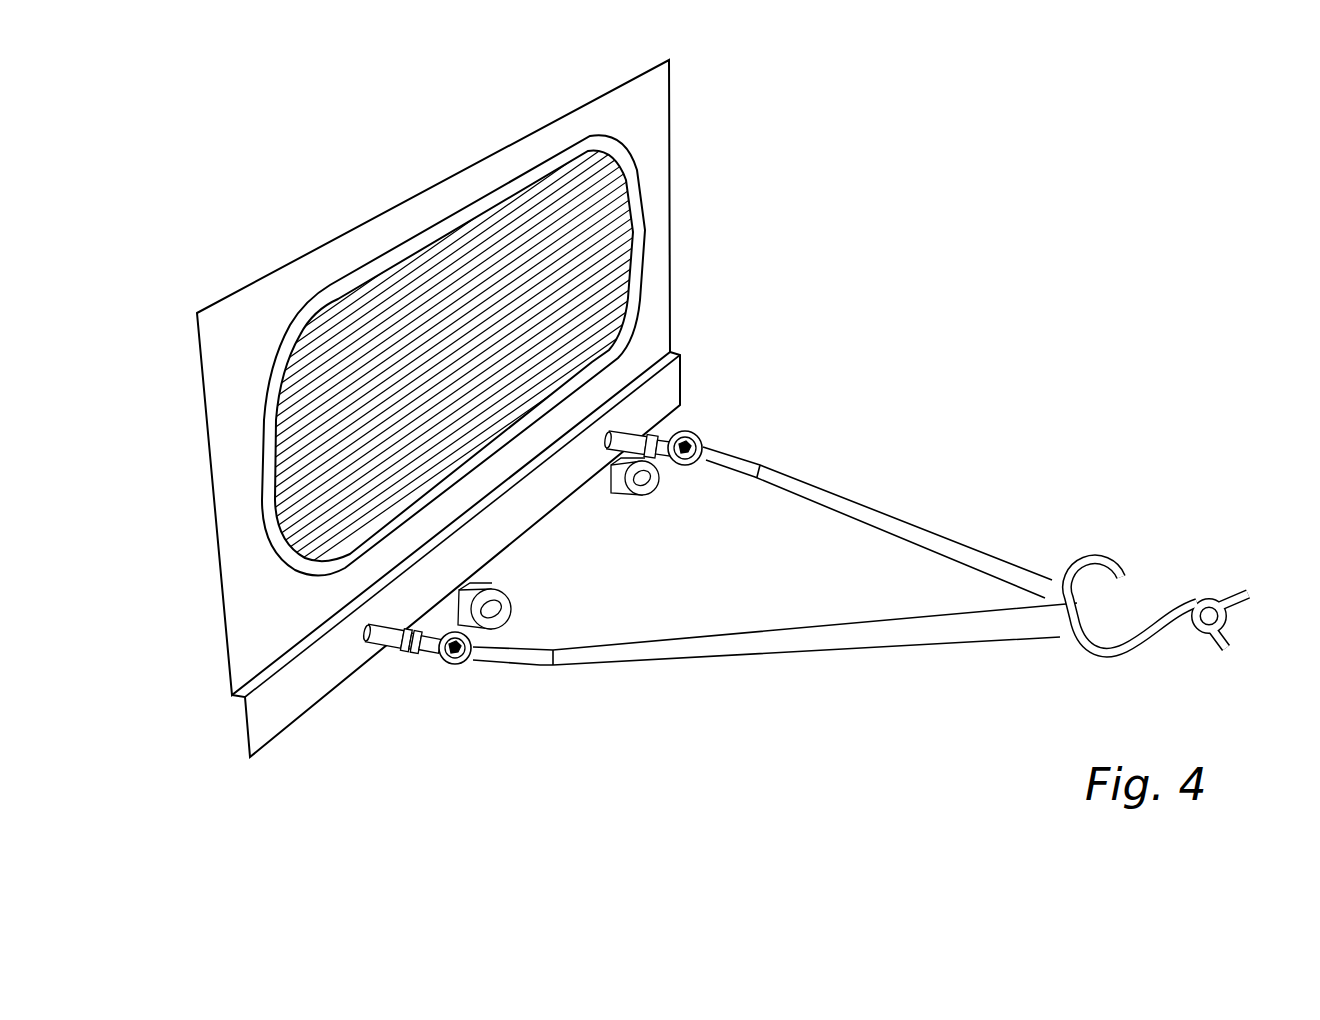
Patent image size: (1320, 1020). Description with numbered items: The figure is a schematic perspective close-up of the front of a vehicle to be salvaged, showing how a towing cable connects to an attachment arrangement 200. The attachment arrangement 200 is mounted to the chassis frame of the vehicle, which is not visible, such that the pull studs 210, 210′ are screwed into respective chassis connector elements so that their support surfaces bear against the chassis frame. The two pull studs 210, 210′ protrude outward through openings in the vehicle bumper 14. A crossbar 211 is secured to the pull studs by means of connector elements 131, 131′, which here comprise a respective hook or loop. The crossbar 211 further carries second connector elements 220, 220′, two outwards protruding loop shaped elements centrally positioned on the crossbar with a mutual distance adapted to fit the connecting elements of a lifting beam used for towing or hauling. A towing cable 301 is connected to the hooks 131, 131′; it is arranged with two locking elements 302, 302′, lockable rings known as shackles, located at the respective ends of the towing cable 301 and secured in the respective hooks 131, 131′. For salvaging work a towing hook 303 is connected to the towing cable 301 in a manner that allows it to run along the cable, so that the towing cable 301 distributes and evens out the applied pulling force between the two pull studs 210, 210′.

The vehicle bumper 14 is at (227, 478).
The attachment arrangement 200 is at (695, 405).
The pull stud 210 is at (666, 429).
The pull stud 210′ is at (418, 659).
The crossbar 211 is at (556, 524).
The second connector element 220 is at (661, 486).
The second connector element 220′ is at (512, 608).
The connector element 131 is at (701, 464).
The connector element 131′ is at (474, 659).
The towing cable 301 is at (800, 633).
The locking element 302 is at (708, 437).
The locking element 302′ is at (477, 661).
The towing hook 303 is at (1152, 612).